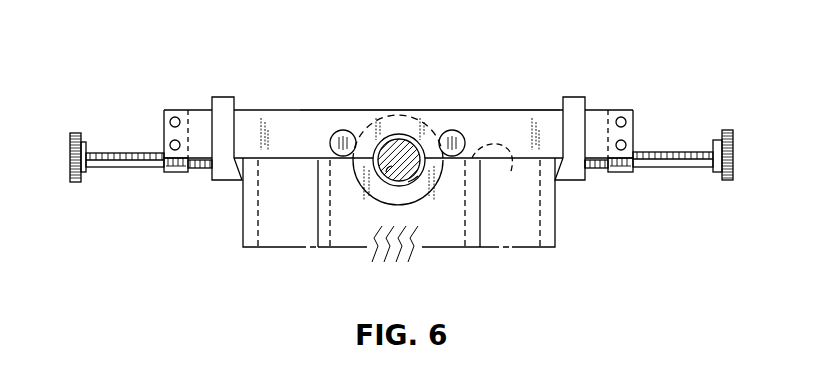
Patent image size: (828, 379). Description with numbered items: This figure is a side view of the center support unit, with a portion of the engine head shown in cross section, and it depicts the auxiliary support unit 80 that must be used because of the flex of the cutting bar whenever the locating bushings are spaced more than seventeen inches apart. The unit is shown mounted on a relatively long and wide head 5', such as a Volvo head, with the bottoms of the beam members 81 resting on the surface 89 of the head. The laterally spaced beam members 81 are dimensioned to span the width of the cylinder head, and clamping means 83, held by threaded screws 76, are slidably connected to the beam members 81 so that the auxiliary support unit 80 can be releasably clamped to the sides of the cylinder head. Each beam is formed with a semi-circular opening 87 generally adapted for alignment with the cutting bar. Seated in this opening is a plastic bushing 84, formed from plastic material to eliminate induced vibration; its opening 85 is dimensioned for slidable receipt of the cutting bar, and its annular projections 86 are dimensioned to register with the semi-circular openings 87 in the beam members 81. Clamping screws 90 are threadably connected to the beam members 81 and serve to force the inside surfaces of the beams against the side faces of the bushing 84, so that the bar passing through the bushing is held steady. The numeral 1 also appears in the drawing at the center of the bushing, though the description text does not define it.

The shaft 1 is at (397, 134).
The head 5' is at (438, 202).
The threaded screws 76 is at (113, 152).
The auxiliary support unit 80 is at (523, 108).
The beam members 81 is at (500, 110).
The clamping means 83 is at (223, 97).
The plastic bushing 84 is at (393, 205).
The opening 85 is at (386, 172).
The annular projections 86 is at (410, 184).
The semi-circular opening 87 is at (389, 142).
The surface of the head 89 is at (510, 175).
The clamping screws 90 is at (346, 130).